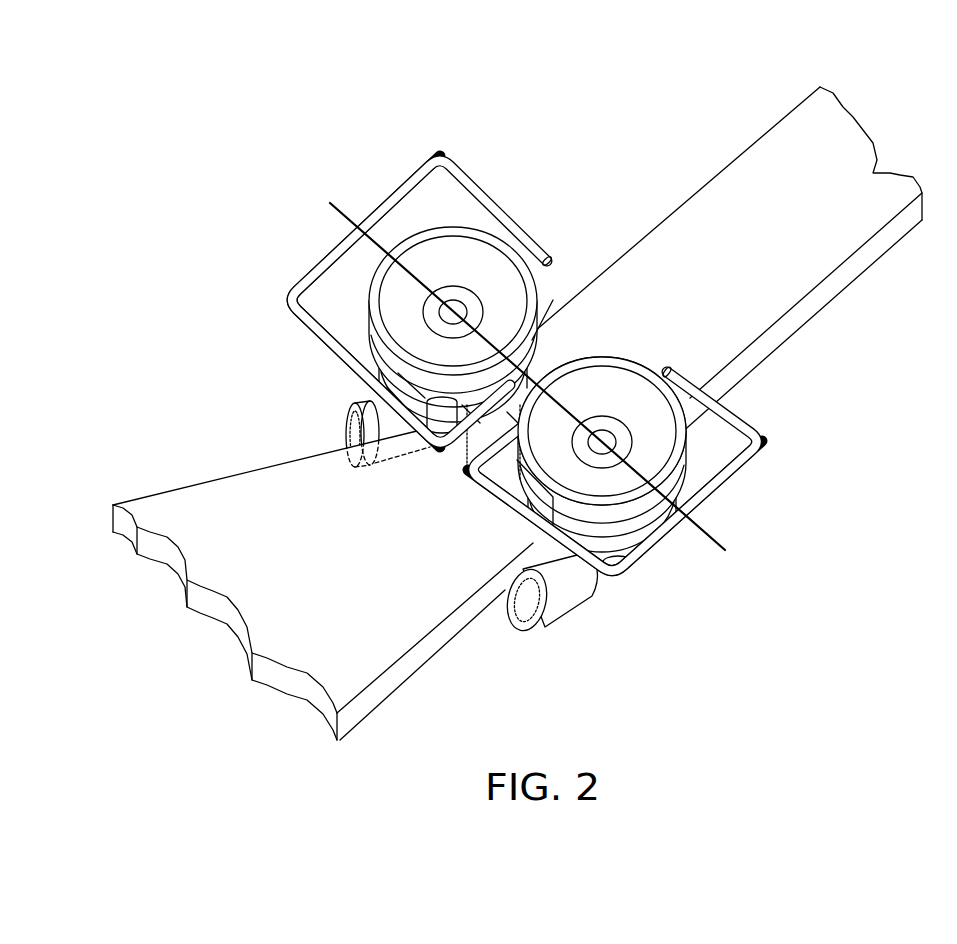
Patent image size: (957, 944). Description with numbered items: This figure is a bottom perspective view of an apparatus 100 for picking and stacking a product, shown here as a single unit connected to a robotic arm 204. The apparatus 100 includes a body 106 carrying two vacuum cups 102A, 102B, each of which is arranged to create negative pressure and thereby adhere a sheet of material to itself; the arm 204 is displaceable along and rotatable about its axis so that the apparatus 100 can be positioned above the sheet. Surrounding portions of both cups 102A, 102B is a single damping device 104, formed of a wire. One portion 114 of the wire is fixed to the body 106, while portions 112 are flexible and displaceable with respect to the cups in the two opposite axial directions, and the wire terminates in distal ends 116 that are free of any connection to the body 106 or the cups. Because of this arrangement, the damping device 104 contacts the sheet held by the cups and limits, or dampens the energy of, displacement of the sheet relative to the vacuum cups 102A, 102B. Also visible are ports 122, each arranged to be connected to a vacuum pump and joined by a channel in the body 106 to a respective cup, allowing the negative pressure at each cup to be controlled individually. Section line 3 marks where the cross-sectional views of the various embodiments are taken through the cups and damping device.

The apparatus 100 is at (577, 108).
The vacuum cup 102A is at (767, 452).
The vacuum cup 102B is at (450, 227).
The damping device 104 is at (496, 365).
The body 106 is at (403, 368).
The portion 112 is at (311, 270).
The portion 114 is at (553, 300).
The distal end 116 is at (558, 259).
The port 122 is at (345, 432).
The robotic arm 204 is at (700, 188).
The line 3- 3 is at (755, 524).